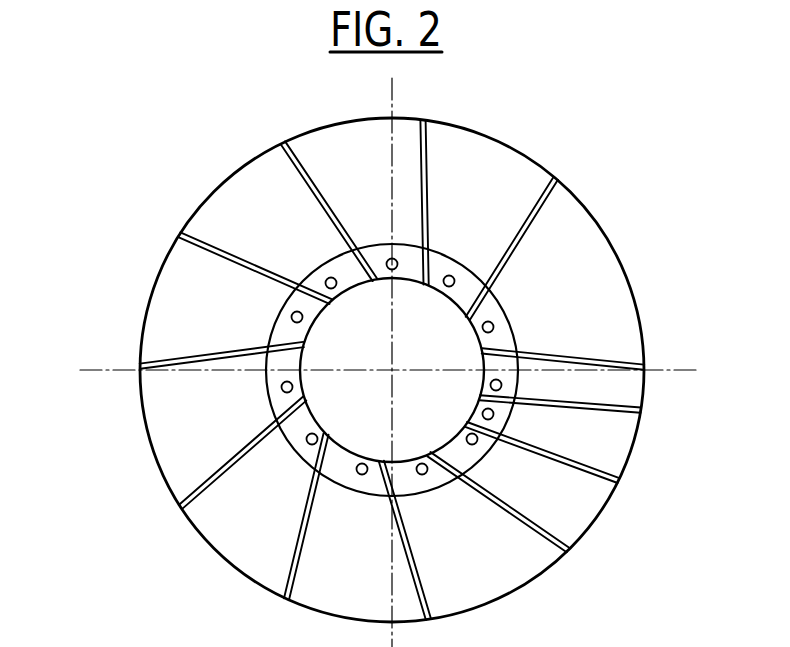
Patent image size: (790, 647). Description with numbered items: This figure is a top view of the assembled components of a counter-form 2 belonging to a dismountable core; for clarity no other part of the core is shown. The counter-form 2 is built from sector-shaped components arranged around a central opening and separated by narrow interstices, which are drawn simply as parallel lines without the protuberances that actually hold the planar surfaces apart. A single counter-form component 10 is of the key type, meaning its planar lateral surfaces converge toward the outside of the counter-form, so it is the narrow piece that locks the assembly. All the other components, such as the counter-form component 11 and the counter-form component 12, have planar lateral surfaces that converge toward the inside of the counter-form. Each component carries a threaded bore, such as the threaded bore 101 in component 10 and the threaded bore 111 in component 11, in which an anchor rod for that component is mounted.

The counter-form 2 is at (110, 281).
The counter-form component of the key type 10 is at (612, 395).
The counter-form component 11 is at (596, 280).
The counter-form component 12 is at (503, 168).
The threaded bore 101 is at (501, 384).
The threaded bore 111 is at (493, 322).